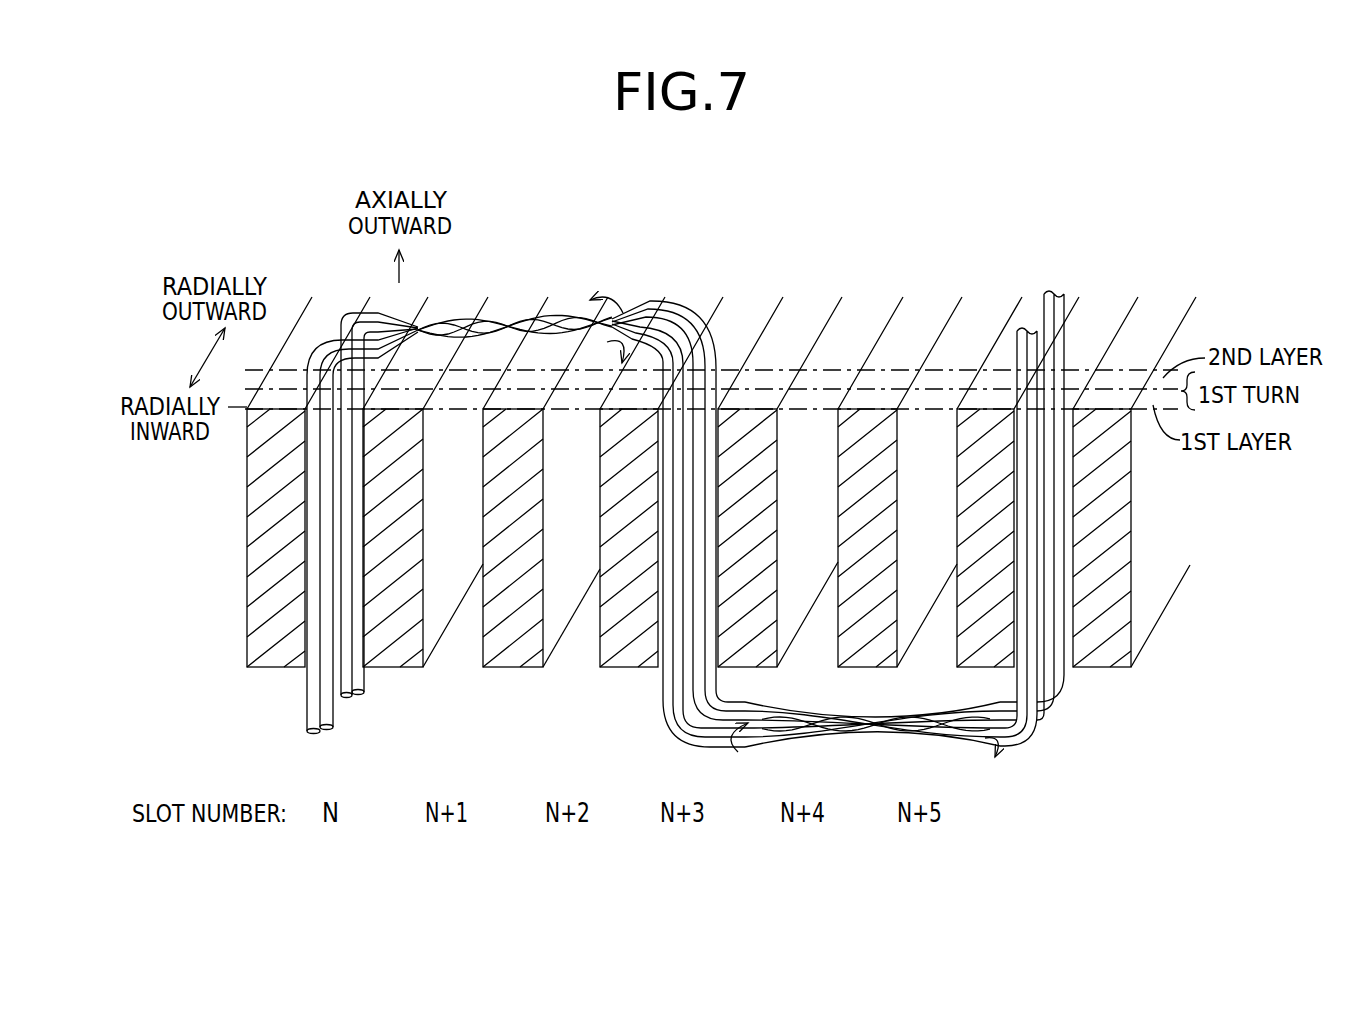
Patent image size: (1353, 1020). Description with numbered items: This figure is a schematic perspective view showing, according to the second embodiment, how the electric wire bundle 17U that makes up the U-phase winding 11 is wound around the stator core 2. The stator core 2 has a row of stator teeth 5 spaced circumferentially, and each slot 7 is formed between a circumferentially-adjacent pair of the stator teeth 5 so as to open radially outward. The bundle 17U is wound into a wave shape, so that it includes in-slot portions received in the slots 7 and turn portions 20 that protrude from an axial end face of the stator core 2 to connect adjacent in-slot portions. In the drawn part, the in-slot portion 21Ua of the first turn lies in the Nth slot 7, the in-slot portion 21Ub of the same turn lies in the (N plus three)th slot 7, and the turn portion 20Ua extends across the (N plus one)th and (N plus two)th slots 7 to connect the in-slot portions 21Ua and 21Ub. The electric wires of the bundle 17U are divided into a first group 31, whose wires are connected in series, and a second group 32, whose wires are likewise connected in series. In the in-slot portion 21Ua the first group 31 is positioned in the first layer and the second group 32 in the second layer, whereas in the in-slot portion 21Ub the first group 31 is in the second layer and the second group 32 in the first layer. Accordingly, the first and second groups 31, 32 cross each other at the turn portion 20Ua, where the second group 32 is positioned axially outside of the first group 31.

The stator core 2 is at (730, 514).
The stator teeth 5 is at (630, 652).
The slots 7 is at (578, 652).
The U-phase winding 11 is at (1047, 727).
The electric wire bundle 17U is at (1057, 275).
The turn portions 20 is at (629, 515).
The turn portion 20Ua is at (629, 515).
The in-slot portion 21Ua is at (307, 560).
The in-slot portion 21Ub is at (716, 453).
The first group 31 is at (318, 533).
The second group 32 is at (352, 493).